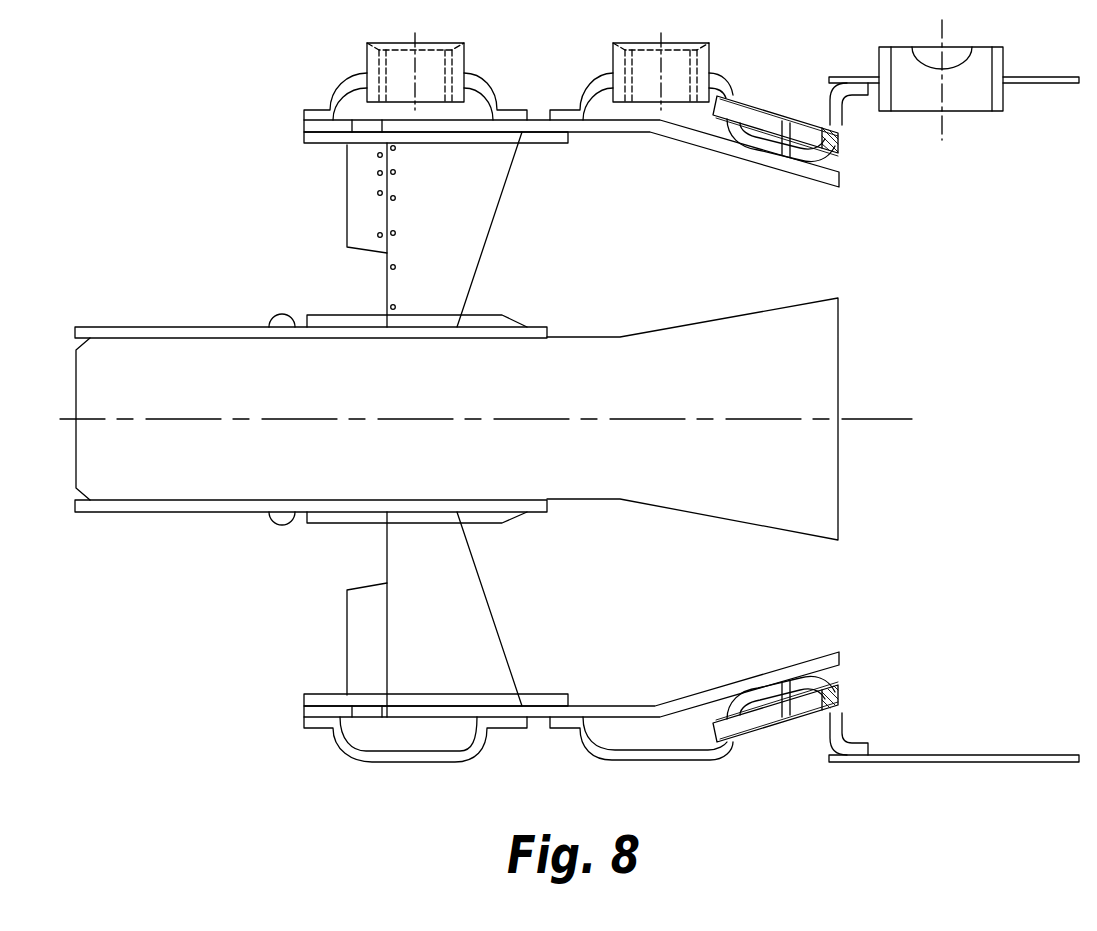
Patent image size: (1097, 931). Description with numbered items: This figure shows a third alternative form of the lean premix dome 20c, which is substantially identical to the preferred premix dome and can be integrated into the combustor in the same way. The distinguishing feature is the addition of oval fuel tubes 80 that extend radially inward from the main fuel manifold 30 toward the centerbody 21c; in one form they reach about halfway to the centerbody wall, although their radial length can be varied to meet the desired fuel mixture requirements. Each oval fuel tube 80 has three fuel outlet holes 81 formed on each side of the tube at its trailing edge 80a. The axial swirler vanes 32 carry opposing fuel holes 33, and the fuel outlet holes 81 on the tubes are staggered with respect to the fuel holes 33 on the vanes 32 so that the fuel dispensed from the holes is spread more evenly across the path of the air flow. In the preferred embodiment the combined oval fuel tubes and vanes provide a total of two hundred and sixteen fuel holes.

The lean premix dome 20c is at (712, 780).
The centerbody 21c is at (817, 355).
The main fuel manifold 30 is at (362, 110).
The vanes 32 is at (488, 163).
The fuel holes 33 is at (393, 150).
The oval fuel tube 80 is at (347, 212).
The trailing edge 80a is at (388, 222).
The fuel outlet holes 81 is at (380, 237).